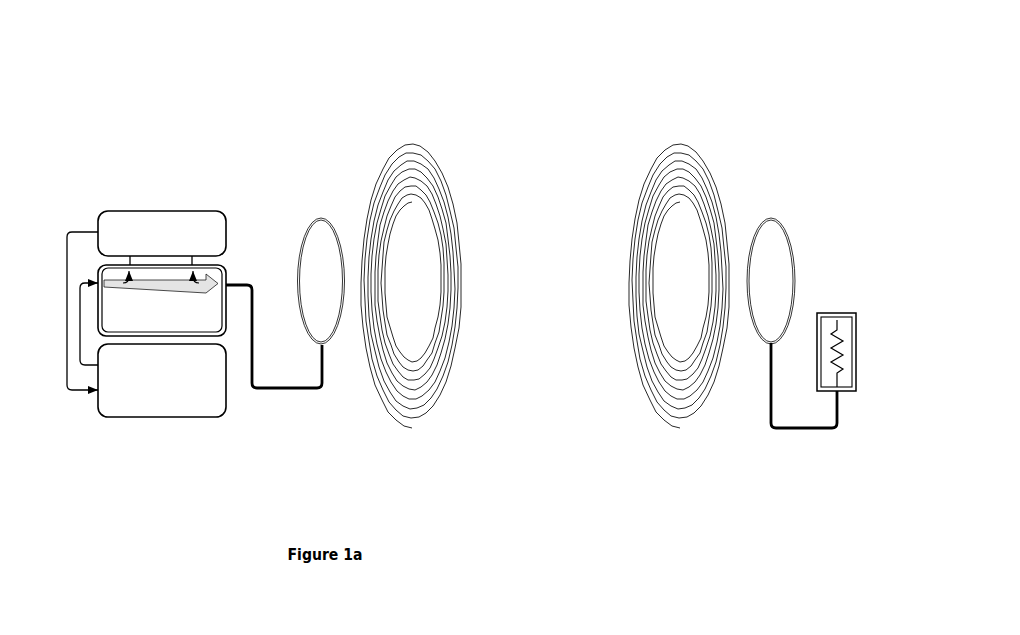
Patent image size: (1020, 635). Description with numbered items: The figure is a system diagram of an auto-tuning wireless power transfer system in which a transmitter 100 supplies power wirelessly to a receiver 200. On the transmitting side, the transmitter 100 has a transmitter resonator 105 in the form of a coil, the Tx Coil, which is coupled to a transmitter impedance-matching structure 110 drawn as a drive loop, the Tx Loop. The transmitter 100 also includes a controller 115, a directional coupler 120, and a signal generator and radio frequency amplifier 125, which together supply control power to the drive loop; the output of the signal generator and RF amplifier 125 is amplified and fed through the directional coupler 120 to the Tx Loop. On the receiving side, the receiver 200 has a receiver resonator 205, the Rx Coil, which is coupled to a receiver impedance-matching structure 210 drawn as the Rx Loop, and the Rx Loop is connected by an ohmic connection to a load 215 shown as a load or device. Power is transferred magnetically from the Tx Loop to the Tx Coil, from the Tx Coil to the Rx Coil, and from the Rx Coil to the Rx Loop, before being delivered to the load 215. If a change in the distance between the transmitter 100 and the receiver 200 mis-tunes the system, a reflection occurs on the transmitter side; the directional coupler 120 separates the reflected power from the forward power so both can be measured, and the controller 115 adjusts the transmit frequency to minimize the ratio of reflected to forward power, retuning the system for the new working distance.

The transmitter 100 is at (240, 138).
The transmitter resonator 105 is at (407, 88).
The transmitter impedance-matching structure 110 is at (318, 172).
The controller 115 is at (144, 200).
The directional coupler 120 is at (117, 313).
The signal generator and radio frequency (RF) amplifier 125 is at (162, 430).
The receiver 200 is at (812, 78).
The receiver resonator 205 is at (670, 88).
The receiver impedance-matching structure 210 is at (776, 174).
The load 215 is at (847, 243).